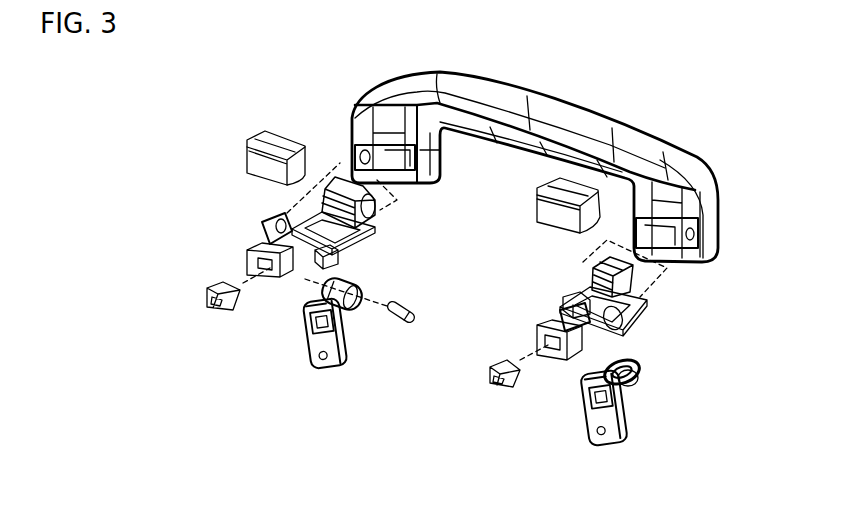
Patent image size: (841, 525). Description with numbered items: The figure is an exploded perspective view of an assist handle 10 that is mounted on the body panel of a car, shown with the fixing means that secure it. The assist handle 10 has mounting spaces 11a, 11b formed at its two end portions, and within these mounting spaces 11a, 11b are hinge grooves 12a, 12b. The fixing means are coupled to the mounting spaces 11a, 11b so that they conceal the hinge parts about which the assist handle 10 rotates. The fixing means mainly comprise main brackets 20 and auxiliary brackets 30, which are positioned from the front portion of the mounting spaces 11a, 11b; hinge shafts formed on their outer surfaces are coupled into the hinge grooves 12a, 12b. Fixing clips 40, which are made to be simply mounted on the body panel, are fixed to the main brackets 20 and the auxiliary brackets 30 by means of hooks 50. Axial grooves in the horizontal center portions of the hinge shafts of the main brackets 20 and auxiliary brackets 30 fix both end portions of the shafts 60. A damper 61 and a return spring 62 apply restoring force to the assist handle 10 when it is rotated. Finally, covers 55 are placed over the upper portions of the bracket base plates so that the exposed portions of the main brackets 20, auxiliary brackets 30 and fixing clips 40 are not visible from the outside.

The assist handle 10 is at (565, 98).
The mounting space 11a is at (396, 75).
The mounting space 11b is at (667, 183).
The hinge groove 12a is at (675, 212).
The hinge groove 12b is at (353, 112).
The main bracket 20 is at (400, 241).
The auxiliary bracket 30 is at (255, 222).
The fixing clip 40 is at (284, 347).
The hook 50 is at (207, 283).
The cover 55 is at (247, 140).
The shaft 60 is at (400, 320).
The damper 61 is at (363, 279).
The return spring 62 is at (630, 363).